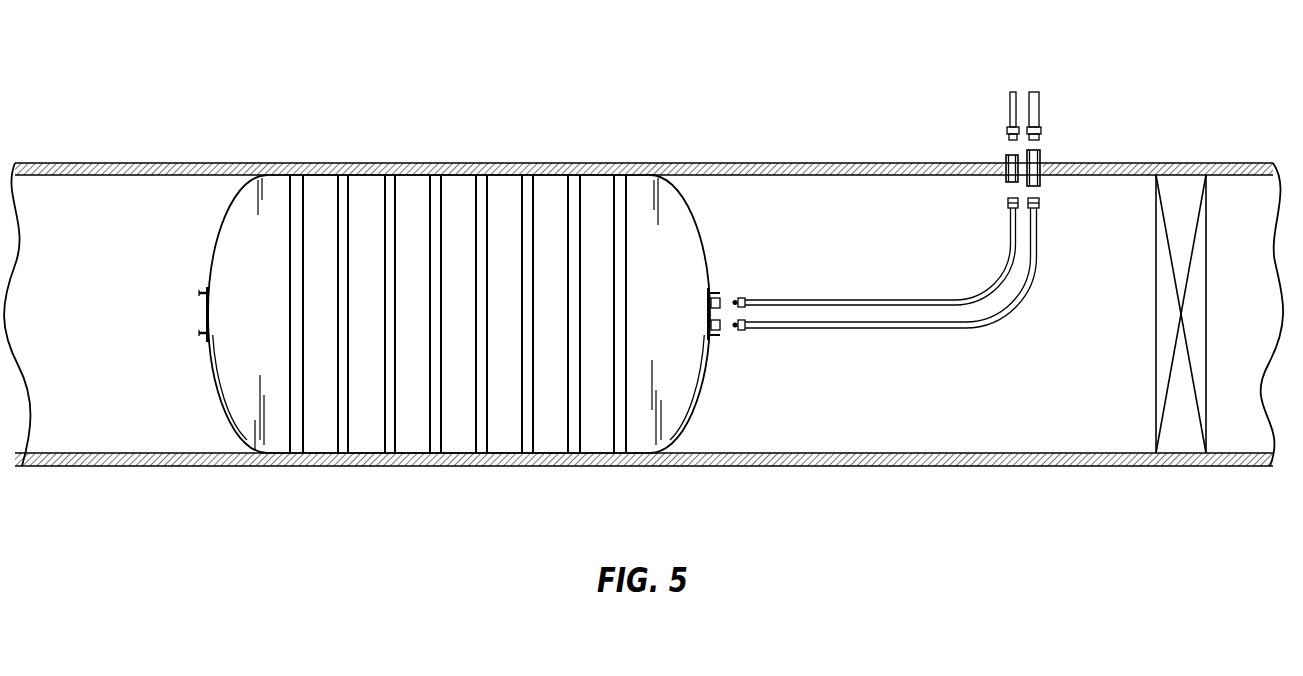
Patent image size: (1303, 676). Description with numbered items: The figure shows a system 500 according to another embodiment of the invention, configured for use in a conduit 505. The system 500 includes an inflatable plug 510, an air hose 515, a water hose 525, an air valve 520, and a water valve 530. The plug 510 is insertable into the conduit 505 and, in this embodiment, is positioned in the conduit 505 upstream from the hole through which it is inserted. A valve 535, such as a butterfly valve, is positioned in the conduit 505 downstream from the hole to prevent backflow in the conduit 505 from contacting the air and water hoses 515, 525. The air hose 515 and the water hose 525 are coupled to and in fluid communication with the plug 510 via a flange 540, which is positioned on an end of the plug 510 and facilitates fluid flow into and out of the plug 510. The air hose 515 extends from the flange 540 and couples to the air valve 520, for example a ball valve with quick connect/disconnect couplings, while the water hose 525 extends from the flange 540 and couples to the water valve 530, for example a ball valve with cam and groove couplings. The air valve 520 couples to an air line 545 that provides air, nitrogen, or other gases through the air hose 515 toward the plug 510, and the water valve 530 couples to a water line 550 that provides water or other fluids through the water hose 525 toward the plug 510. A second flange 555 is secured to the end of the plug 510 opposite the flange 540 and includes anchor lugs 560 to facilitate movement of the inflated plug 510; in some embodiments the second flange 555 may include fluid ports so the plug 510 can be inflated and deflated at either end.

The system 500 is at (841, 88).
The conduit 505 is at (198, 162).
The inflatable plug 510 is at (190, 222).
The air hose 515 is at (793, 299).
The air valve 520 is at (1006, 155).
The water hose 525 is at (828, 329).
The water valve 530 is at (1042, 151).
The valve 535 is at (1180, 190).
The flange 540 is at (731, 352).
The air line 545 is at (1009, 112).
The water line 550 is at (1040, 110).
The second flange 555 is at (170, 318).
The anchor lugs 560 is at (201, 338).